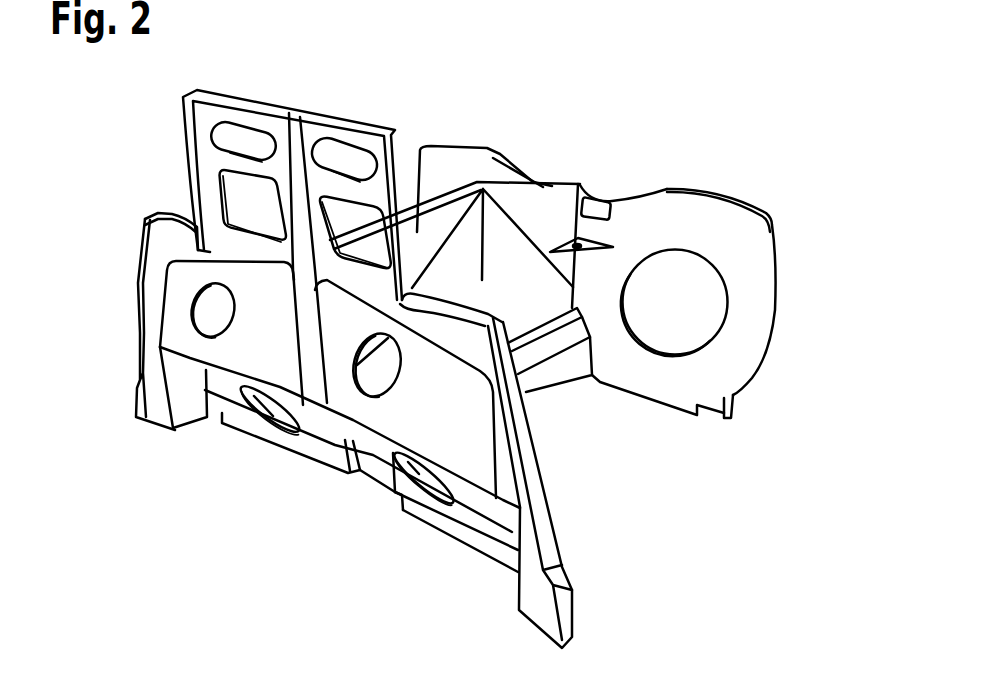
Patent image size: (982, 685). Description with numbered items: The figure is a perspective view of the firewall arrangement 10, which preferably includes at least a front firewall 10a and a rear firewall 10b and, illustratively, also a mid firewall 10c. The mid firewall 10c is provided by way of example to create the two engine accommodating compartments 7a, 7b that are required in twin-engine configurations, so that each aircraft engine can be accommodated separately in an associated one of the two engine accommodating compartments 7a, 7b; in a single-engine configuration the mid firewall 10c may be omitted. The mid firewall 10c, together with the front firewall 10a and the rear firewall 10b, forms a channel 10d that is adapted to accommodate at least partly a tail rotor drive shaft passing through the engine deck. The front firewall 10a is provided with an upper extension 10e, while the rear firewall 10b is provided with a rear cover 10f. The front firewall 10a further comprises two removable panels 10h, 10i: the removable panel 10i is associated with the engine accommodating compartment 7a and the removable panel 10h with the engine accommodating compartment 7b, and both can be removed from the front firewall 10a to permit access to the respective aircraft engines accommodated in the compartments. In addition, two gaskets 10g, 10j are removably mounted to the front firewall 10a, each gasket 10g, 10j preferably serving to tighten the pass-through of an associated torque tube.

The firewall arrangement 10 is at (601, 108).
The engine accommodating compartment 7a is at (545, 223).
The engine accommodating compartment 7b is at (452, 181).
The front firewall 10a is at (562, 610).
The rear firewall 10b is at (722, 222).
The mid firewall 10c is at (409, 240).
The channel 10d is at (568, 371).
The upper extension 10e is at (338, 137).
The rear cover 10f is at (731, 405).
The gasket 10g is at (437, 489).
The removable panel 10h is at (230, 353).
The removable panel 10i is at (400, 417).
The gasket 10j is at (273, 418).